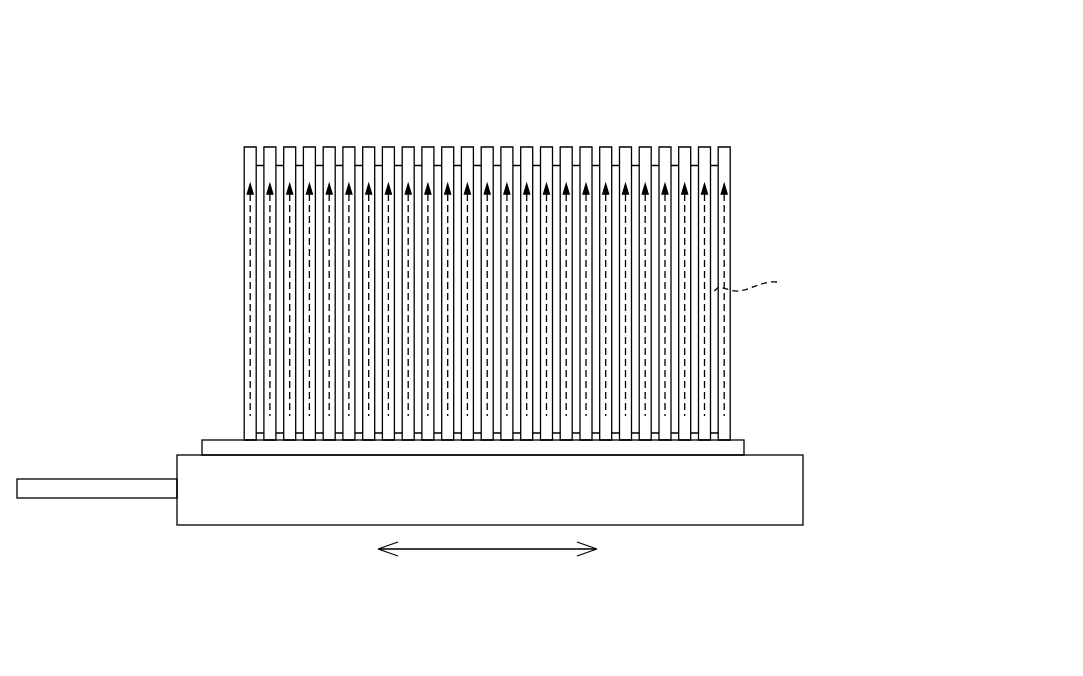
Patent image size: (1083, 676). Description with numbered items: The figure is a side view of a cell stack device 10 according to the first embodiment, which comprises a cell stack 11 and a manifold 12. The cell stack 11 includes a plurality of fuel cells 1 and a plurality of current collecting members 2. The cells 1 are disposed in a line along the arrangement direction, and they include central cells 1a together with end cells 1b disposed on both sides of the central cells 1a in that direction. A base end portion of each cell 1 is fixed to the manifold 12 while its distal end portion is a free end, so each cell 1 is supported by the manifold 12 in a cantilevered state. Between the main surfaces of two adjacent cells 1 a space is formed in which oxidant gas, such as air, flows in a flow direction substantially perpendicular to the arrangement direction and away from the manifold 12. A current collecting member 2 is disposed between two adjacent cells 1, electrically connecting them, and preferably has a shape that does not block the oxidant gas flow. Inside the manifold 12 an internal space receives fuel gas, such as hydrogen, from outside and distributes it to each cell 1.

The cell stack device 10 is at (798, 77).
The cell stack 11 is at (228, 362).
The manifold 12 is at (178, 536).
The fuel cell 1 is at (653, 89).
The central cell 1a is at (578, 136).
The end cell 1b is at (397, 136).
The current collecting member 2 is at (700, 161).